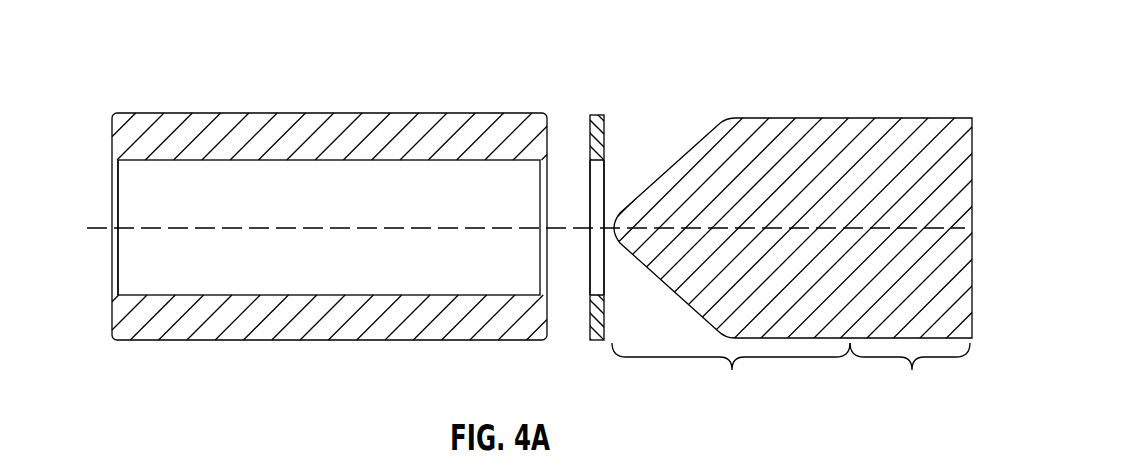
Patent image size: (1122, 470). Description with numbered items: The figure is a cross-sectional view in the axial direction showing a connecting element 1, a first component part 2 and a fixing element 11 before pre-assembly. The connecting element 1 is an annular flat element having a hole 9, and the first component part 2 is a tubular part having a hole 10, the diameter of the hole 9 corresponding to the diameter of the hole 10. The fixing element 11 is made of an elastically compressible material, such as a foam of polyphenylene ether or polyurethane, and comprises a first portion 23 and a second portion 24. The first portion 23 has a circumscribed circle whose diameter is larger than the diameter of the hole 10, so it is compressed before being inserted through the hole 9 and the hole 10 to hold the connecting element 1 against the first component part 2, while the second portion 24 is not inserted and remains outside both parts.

The connecting element 1 is at (593, 116).
The first component part 2 is at (292, 130).
The hole 9 is at (600, 178).
The hole 10 is at (124, 205).
The fixing element 11 is at (848, 135).
The first portion 23 is at (731, 374).
The second portion 24 is at (910, 374).